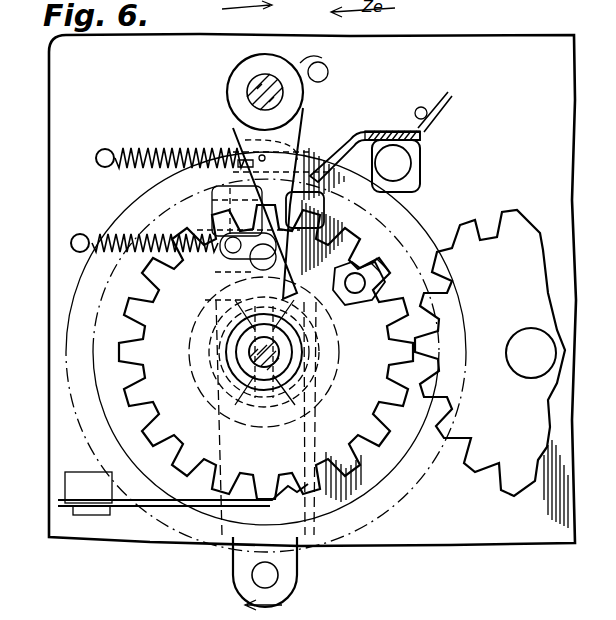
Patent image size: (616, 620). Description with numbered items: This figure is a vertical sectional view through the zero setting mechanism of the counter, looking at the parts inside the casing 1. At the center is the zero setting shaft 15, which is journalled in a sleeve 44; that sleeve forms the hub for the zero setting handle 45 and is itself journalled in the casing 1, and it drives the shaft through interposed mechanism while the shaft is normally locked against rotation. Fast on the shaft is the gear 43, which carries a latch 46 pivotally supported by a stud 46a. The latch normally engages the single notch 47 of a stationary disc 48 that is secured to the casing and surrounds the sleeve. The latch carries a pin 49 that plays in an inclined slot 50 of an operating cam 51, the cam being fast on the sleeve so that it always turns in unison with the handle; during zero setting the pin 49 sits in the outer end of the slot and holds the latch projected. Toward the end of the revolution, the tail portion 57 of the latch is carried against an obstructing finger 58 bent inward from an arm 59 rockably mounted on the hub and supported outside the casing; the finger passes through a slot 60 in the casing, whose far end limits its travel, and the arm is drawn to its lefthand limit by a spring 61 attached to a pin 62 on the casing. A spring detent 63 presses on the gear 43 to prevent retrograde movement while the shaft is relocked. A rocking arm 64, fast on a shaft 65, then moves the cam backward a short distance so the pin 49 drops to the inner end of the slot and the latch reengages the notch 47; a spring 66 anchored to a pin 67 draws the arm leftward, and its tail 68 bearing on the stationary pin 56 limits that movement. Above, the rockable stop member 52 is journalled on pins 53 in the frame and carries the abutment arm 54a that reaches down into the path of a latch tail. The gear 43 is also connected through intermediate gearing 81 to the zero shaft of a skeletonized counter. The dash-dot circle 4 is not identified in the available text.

The casing 1 is at (574, 136).
The drum circle 4 is at (90, 442).
The zero setting shaft 15 is at (278, 370).
The gear 43 is at (168, 340).
The sleeve 44 is at (225, 366).
The zero setting handle 45 is at (245, 578).
The latch 46 is at (340, 262).
The stud 46a is at (378, 276).
The notch 47 is at (357, 297).
The stationary disc 48 is at (330, 350).
The pin 49 is at (250, 263).
The inclined slot 50 is at (230, 251).
The operating cam 51 is at (100, 318).
The stop or detent member 52 is at (400, 131).
The pins 53 is at (412, 163).
The abutment arm 54a is at (330, 158).
The pin 56 is at (328, 74).
The tail portion 57 is at (323, 214).
The obstructing finger 58 is at (225, 212).
The arm 59 is at (215, 273).
The slot 60 is at (345, 216).
The spring 61 is at (110, 240).
The pin 62 is at (75, 238).
The spring detent 63 is at (238, 500).
The rocking arm 64 is at (243, 141).
The shaft 65 is at (250, 88).
The spring 66 is at (135, 150).
The pin 67 is at (95, 158).
The tail 68 is at (310, 58).
The intermediate gearing 81 is at (498, 462).